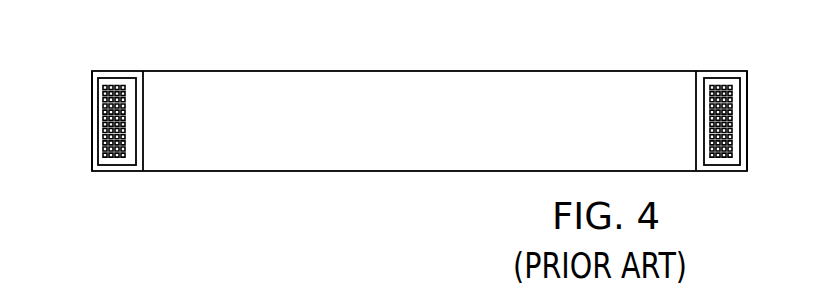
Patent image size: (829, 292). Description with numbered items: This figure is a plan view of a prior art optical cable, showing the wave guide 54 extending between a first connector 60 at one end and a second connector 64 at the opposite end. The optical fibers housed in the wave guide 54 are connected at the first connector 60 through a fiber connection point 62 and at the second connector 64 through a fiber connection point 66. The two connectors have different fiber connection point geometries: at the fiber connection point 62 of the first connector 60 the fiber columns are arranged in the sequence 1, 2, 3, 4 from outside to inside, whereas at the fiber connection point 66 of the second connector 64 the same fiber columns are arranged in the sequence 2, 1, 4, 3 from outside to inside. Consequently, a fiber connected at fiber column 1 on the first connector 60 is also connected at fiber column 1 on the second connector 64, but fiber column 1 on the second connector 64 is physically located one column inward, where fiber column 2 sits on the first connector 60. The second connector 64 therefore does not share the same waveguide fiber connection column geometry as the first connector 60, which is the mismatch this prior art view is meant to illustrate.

The wave guide 54 is at (189, 172).
The first connector 60 is at (92, 121).
The fiber connection point 62 is at (98, 82).
The second connector 64 is at (748, 131).
The fiber connection point 66 is at (740, 98).
The fiber column 1 is at (105, 84).
The fiber column 2 is at (111, 84).
The fiber column 3 is at (118, 84).
The fiber column 4 is at (124, 84).